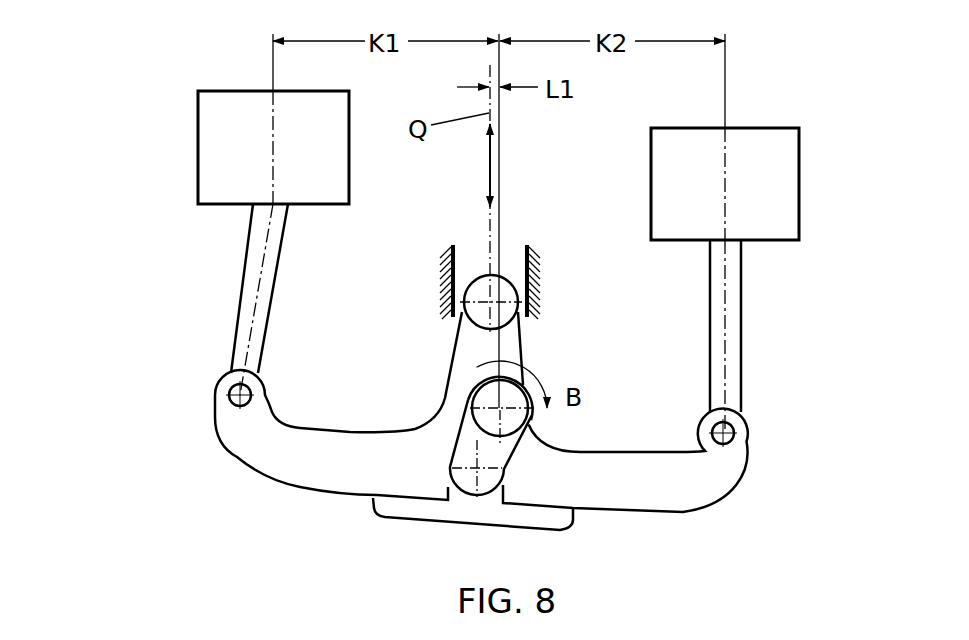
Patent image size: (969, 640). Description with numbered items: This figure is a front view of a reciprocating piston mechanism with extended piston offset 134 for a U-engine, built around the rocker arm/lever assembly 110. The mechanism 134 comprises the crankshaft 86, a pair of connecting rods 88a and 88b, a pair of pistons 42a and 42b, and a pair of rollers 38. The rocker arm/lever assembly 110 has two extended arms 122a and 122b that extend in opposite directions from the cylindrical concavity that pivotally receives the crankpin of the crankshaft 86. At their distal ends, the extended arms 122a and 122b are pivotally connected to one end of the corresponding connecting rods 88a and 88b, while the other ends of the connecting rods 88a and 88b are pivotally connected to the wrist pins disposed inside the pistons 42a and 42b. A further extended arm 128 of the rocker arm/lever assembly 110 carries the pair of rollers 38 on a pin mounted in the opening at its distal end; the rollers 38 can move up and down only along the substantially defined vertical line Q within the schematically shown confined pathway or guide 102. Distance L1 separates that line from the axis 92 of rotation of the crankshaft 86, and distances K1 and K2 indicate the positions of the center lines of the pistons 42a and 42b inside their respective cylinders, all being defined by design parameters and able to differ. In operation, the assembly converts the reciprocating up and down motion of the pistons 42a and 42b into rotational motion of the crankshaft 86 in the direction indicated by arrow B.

The piston 42a is at (215, 92).
The piston 42b is at (765, 127).
The connecting rod 88a is at (240, 280).
The connecting rod 88b is at (740, 303).
The pair of rollers 38 is at (477, 278).
The confined pathway/guide 102 is at (528, 245).
The extended arm 128 is at (452, 348).
The crankshaft 86 is at (455, 433).
The axis of rotation of the crankshaft 92 is at (500, 407).
The rocker arm/lever assembly 110 is at (553, 477).
The extended arm 122a is at (307, 490).
The extended arm 122b is at (687, 513).
The reciprocating piston mechanism with extended piston offset 134 is at (207, 472).